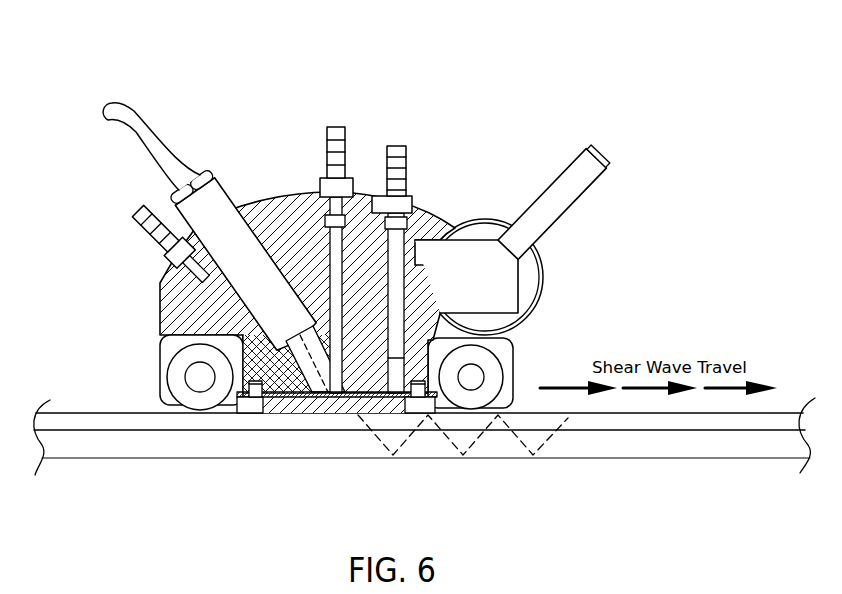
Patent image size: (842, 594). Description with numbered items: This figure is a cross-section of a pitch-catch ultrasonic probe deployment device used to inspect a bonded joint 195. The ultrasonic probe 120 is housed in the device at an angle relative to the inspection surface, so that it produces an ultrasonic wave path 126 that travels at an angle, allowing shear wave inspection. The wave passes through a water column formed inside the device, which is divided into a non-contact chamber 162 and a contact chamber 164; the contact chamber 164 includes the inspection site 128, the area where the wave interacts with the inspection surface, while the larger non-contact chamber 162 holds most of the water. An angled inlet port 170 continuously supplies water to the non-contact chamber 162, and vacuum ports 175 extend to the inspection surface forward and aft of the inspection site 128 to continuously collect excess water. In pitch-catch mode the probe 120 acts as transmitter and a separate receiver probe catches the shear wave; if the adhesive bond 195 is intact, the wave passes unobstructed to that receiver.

The ultrasonic probe 120 is at (268, 282).
The ultrasonic wave path 126 is at (518, 437).
The inspection site 128 is at (352, 416).
The non-contact chamber 162 is at (304, 377).
The contact chamber 164 is at (338, 404).
The angled inlet port 170 is at (339, 125).
The vacuum ports 175 is at (400, 144).
The bonded joint 195 is at (647, 432).